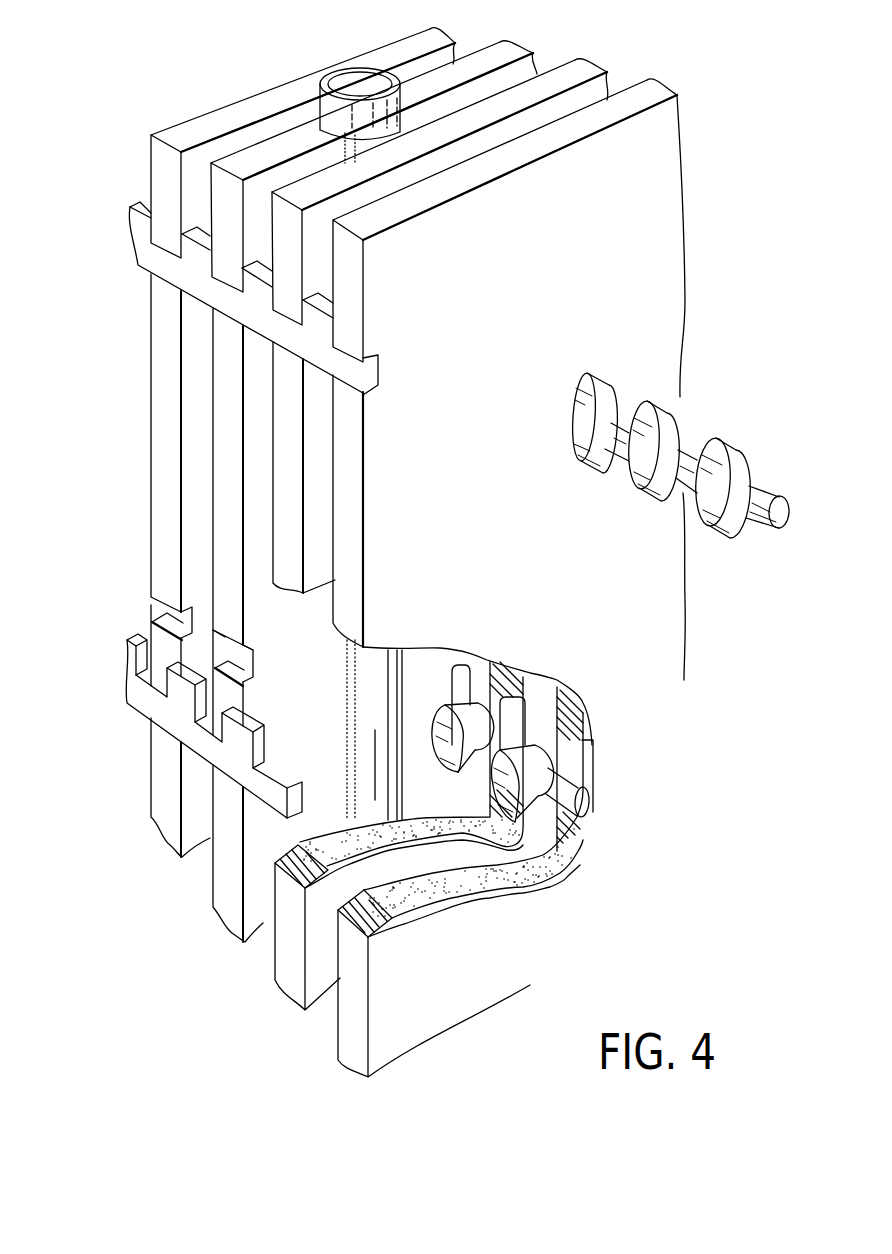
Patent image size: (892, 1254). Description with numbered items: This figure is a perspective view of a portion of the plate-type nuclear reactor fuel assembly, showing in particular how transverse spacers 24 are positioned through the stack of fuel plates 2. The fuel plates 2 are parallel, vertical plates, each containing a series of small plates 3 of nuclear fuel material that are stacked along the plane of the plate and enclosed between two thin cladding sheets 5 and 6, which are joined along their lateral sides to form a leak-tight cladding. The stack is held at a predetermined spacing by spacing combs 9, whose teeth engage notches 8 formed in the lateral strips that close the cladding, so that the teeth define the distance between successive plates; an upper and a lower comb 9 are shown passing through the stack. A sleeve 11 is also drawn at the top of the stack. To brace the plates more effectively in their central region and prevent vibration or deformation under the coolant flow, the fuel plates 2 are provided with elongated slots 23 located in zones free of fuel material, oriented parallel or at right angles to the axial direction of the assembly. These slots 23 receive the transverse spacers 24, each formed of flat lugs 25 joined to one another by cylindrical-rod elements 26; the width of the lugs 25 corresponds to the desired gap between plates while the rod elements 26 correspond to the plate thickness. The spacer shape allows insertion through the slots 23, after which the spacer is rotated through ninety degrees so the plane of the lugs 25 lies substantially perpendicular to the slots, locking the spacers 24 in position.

The fuel plates 2 is at (258, 160).
The small plates of nuclear fuel material 3 is at (350, 850).
The thin cladding sheet 5 is at (480, 897).
The thin cladding sheet 6 is at (390, 880).
The notches 8 is at (253, 652).
The spacing combs 9 is at (190, 297).
The sleeve 11 is at (368, 68).
The elongated slots 23 is at (588, 372).
The transverse spacers 24 is at (725, 428).
The flat lugs 25 is at (640, 465).
The cylindrical-rod elements 26 is at (608, 432).